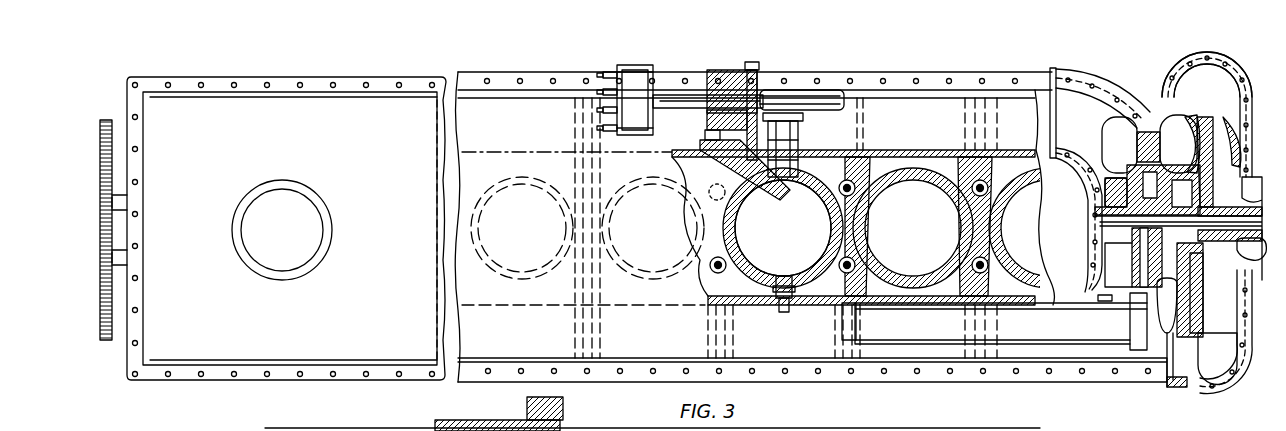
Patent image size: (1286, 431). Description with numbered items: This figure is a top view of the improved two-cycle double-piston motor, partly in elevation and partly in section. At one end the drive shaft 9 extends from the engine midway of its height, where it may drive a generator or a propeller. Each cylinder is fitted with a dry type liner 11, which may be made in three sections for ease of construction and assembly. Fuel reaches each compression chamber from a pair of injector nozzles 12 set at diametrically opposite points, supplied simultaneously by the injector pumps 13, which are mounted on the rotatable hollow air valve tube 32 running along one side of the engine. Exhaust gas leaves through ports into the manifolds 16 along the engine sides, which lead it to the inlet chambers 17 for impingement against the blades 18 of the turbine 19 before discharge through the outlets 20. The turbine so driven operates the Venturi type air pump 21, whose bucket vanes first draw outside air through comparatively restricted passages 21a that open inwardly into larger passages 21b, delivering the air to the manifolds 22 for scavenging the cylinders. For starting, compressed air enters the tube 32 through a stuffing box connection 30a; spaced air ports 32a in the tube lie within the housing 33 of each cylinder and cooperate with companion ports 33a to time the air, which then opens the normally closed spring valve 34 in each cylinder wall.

The drive shaft 9 is at (115, 265).
The liner 11 is at (820, 262).
The injector nozzles 12 is at (600, 73).
The injector pumps 13 is at (634, 66).
The manifolds 16 is at (660, 340).
The inlet chambers 17 is at (1120, 130).
The blades 18 is at (1128, 264).
The turbine 19 is at (1147, 165).
The outlets 20 is at (1178, 125).
The air pump 21 is at (1237, 158).
The restricted passages 21a is at (1252, 258).
The larger passages 21b is at (1202, 360).
The manifolds 22 is at (1100, 78).
The stuffing box connection 30a is at (994, 362).
The rotatable hollow air valve tube 32 is at (664, 100).
The air ports 32a is at (798, 95).
The housing 33 is at (738, 70).
The companion ports 33a is at (712, 140).
The spring valve 34 is at (783, 228).